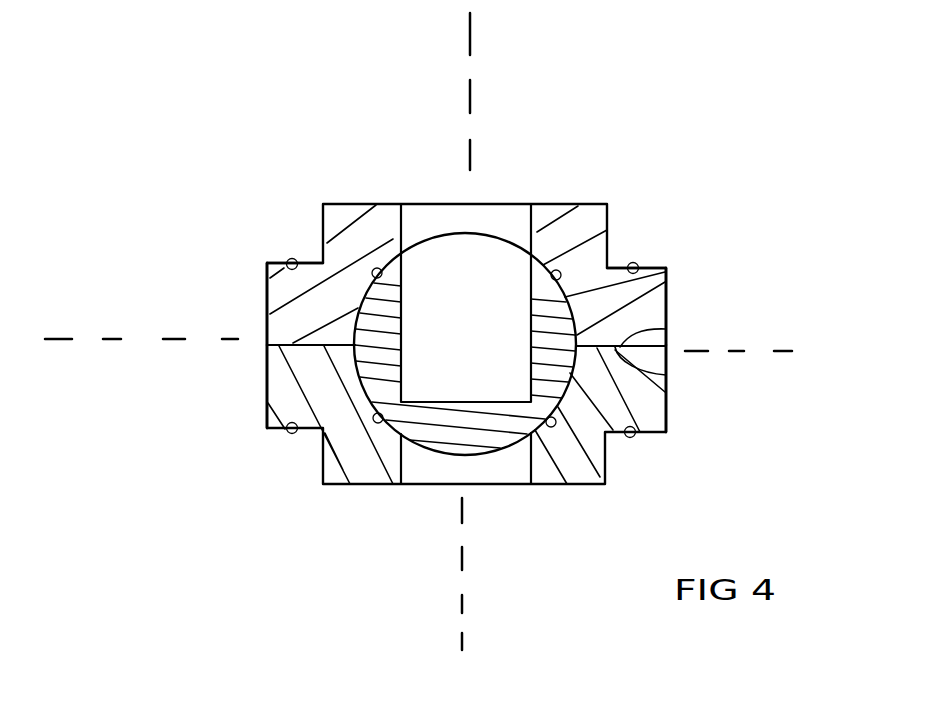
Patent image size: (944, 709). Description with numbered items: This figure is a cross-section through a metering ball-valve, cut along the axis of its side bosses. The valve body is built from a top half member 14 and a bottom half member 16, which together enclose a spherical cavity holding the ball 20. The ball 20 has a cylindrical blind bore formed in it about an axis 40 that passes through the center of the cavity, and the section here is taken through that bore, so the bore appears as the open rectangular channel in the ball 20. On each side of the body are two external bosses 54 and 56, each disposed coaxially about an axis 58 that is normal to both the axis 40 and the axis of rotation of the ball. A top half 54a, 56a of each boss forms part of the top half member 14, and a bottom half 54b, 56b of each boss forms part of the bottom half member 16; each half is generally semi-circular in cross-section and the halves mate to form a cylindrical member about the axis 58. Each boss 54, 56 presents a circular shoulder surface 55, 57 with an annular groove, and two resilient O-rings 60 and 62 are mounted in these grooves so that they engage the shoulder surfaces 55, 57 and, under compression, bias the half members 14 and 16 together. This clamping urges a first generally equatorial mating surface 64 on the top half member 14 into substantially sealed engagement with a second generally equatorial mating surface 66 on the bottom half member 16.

The top half member 14 is at (343, 228).
The bottom half member 16 is at (350, 455).
The ball 20 is at (483, 428).
The axis of the blind bore 40 is at (471, 35).
The external boss 54 is at (700, 306).
The top half of boss 54a is at (660, 291).
The bottom half of boss 54b is at (651, 404).
The circular shoulder surface 55 is at (653, 264).
The external boss 56 is at (218, 326).
The top half of boss 56a is at (266, 296).
The bottom half of boss 56b is at (277, 377).
The circular shoulder surface 57 is at (275, 262).
The boss axis 58 is at (870, 330).
The O-ring 60 is at (637, 259).
The O-ring 62 is at (291, 254).
The first equatorial mating surface 64 is at (666, 329).
The second equatorial mating surface 66 is at (666, 375).